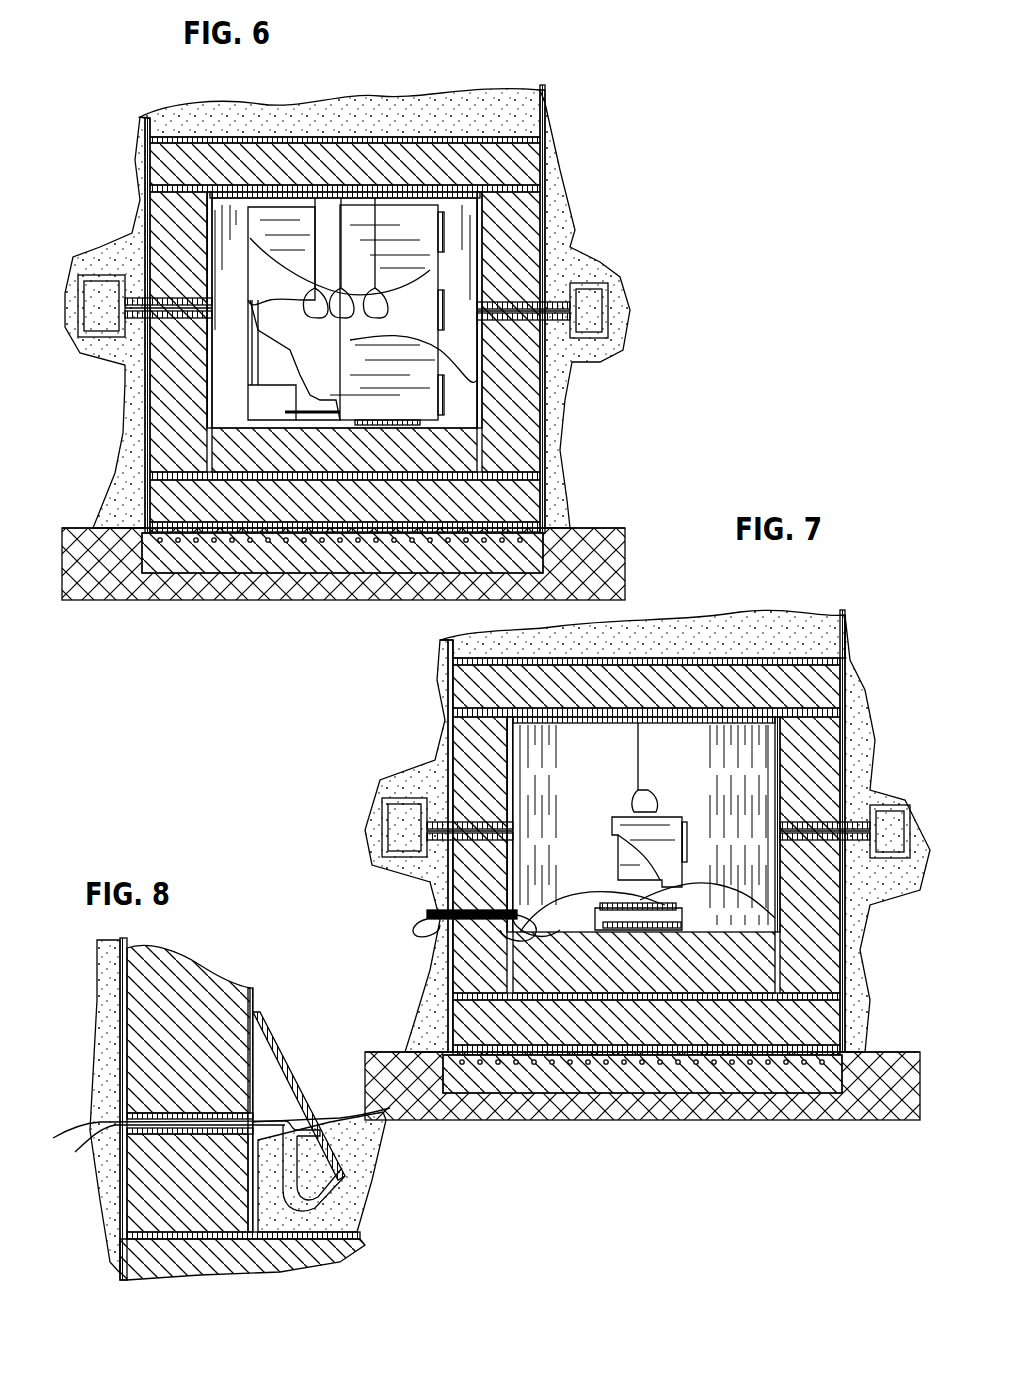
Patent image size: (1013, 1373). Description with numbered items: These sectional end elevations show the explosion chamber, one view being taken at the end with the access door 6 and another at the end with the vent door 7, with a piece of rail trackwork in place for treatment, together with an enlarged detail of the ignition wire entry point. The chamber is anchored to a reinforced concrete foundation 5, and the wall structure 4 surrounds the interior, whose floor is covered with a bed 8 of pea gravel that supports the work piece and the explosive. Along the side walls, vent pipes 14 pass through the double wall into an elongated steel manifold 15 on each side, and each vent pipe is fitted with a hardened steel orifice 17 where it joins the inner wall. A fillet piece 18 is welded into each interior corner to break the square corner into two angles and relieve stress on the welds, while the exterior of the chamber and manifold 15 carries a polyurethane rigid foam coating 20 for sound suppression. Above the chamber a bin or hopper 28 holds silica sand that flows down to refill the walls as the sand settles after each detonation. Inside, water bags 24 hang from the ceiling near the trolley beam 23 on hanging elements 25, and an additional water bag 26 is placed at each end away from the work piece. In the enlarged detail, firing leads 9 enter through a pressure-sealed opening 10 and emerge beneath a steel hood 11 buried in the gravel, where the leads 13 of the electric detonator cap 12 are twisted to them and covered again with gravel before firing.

In FIG. 6, the concrete wall 4 is at (522, 168).
In FIG. 7, the concrete wall 4 is at (828, 694).
In FIG. 8, the concrete wall 4 is at (238, 1020).
In FIG. 6, the reinforced concrete foundation 5 is at (170, 560).
In FIG. 7, the reinforced concrete foundation 5 is at (644, 1090).
In FIG. 8, the reinforced concrete foundation 5 is at (290, 1252).
In FIG. 6, the access door 6 is at (465, 375).
In FIG. 7, the vent door 7 is at (775, 870).
In FIG. 6, the bed of granular shock-damping material 8 is at (455, 455).
In FIG. 7, the bed of granular shock-damping material 8 is at (480, 958).
In FIG. 8, the firing leads 9 is at (103, 1104).
In FIG. 8, the pressure-sealed opening 10 is at (262, 1048).
In FIG. 7, the shield box or hood 11 is at (425, 926).
In FIG. 8, the shield box or hood 11 is at (300, 1102).
In FIG. 7, the electric detonator cap 12 is at (780, 910).
In FIG. 7, the detonator cap leads 13 is at (440, 913).
In FIG. 8, the detonator cap leads 13 is at (325, 1114).
In FIG. 6, the vent pipes 14 is at (180, 318).
In FIG. 7, the vent pipes 14 is at (450, 806).
In FIG. 6, the manifold 15 is at (94, 290).
In FIG. 7, the manifold 15 is at (400, 812).
In FIG. 6, the hardened steel orifice 17 is at (150, 262).
In FIG. 7, the hardened steel orifice 17 is at (500, 798).
In FIG. 6, the fillet piece 18 is at (232, 190).
In FIG. 7, the fillet piece 18 is at (758, 712).
In FIG. 6, the polyurethane rigid foam coating 20 is at (135, 192).
In FIG. 7, the polyurethane rigid foam coating 20 is at (440, 684).
In FIG. 8, the polyurethane rigid foam coating 20 is at (105, 1008).
In FIG. 6, the trolley beam 23 is at (318, 290).
In FIG. 6, the water bags 24 is at (400, 290).
In FIG. 6, the weights 25 is at (350, 292).
In FIG. 7, the weights 25 is at (650, 740).
In FIG. 7, the additional water bag 26 is at (650, 820).
In FIG. 6, the bin or hopper 28 is at (548, 104).
In FIG. 7, the bin or hopper 28 is at (848, 614).